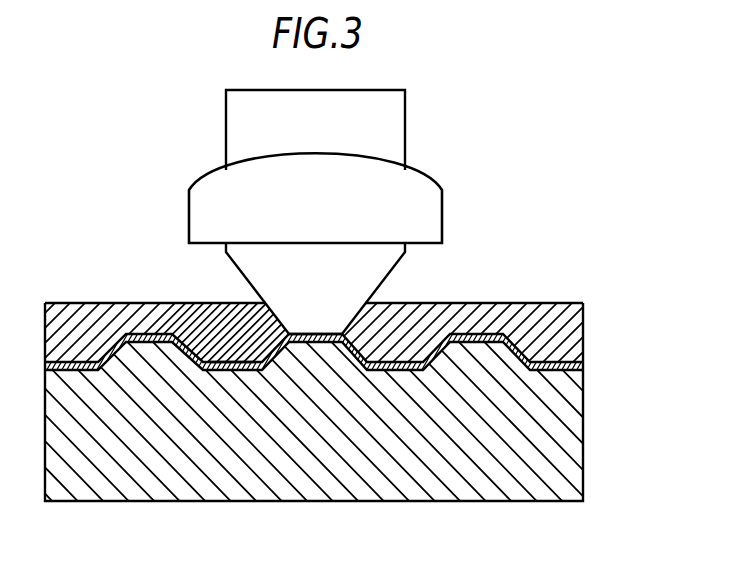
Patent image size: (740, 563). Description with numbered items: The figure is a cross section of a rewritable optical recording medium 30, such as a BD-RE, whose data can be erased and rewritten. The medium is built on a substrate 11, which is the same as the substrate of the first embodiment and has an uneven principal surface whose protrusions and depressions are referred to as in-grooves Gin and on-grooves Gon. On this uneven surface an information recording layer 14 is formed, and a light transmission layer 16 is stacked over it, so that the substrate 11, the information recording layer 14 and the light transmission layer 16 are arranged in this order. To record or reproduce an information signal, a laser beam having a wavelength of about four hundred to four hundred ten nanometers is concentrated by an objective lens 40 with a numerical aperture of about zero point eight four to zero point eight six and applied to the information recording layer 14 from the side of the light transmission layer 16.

The optical recording medium 30 is at (97, 133).
The objective lens 40 is at (425, 209).
The light transmission layer 16 is at (571, 316).
The information recording layer 14 is at (575, 363).
The substrate 11 is at (573, 467).
The in-groove Gin is at (234, 362).
The on-groove Gon is at (310, 342).